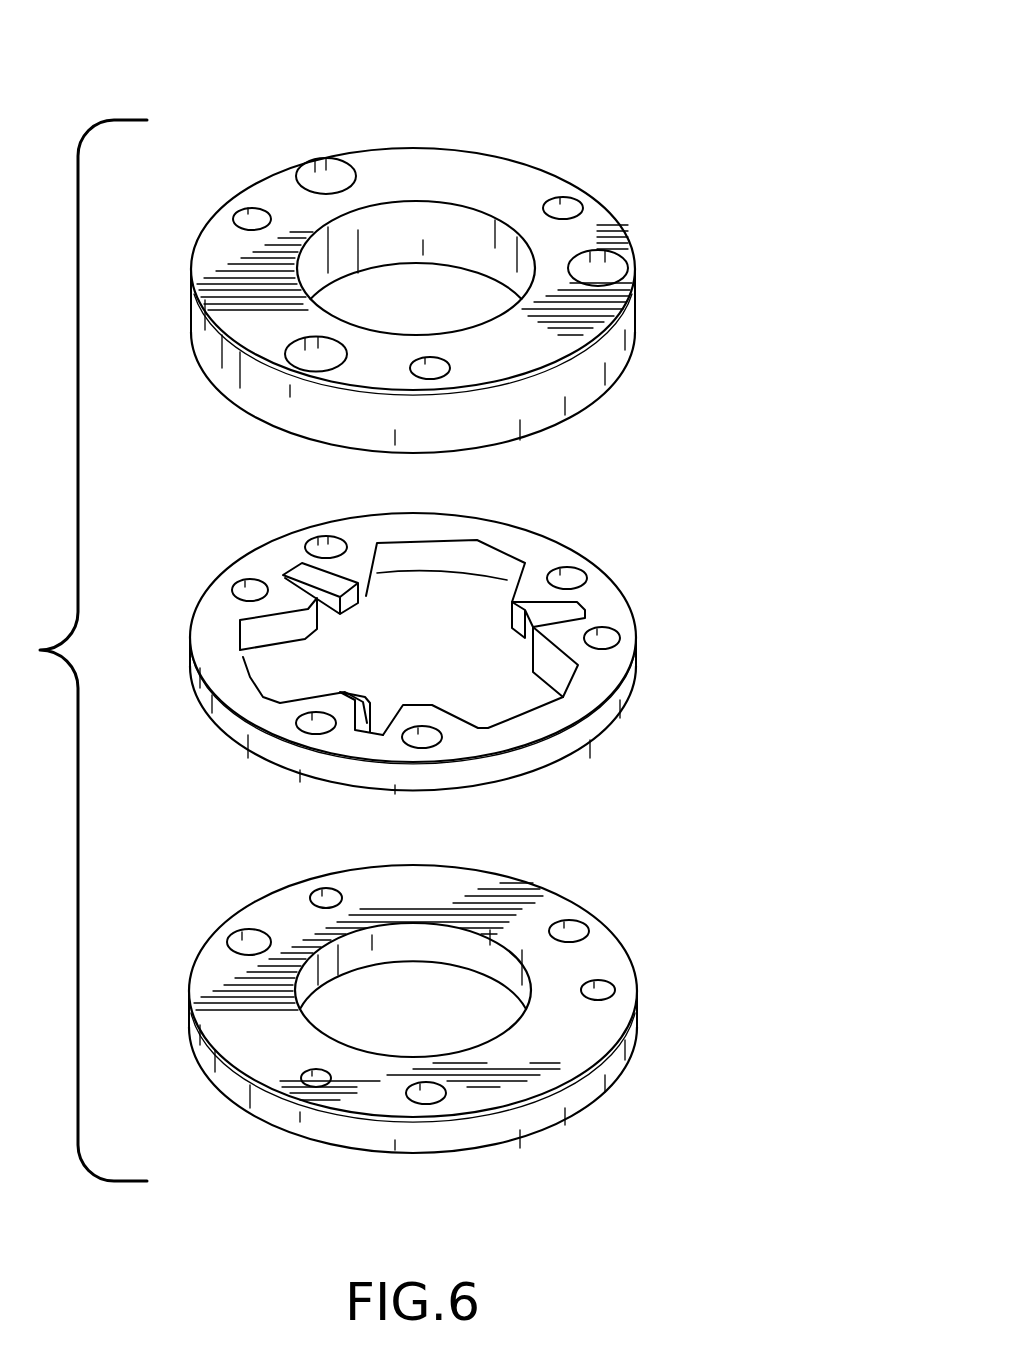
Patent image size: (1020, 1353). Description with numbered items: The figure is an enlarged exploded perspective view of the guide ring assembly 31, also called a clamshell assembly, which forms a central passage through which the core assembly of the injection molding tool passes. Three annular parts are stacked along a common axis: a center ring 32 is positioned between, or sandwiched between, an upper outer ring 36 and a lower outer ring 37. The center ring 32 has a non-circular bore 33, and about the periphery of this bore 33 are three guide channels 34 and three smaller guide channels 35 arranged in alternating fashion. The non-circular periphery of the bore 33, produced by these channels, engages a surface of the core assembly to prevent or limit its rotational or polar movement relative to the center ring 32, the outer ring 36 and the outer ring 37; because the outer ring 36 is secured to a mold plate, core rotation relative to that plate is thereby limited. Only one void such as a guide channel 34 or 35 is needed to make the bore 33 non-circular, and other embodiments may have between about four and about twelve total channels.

The guide ring assembly 31 is at (745, 111).
The center ring 32 is at (436, 650).
The non-circular bore 33 is at (430, 656).
The guide channel 34 is at (466, 588).
The smaller guide channel 35 is at (295, 578).
The outer ring 36 is at (592, 226).
The outer ring 37 is at (535, 914).